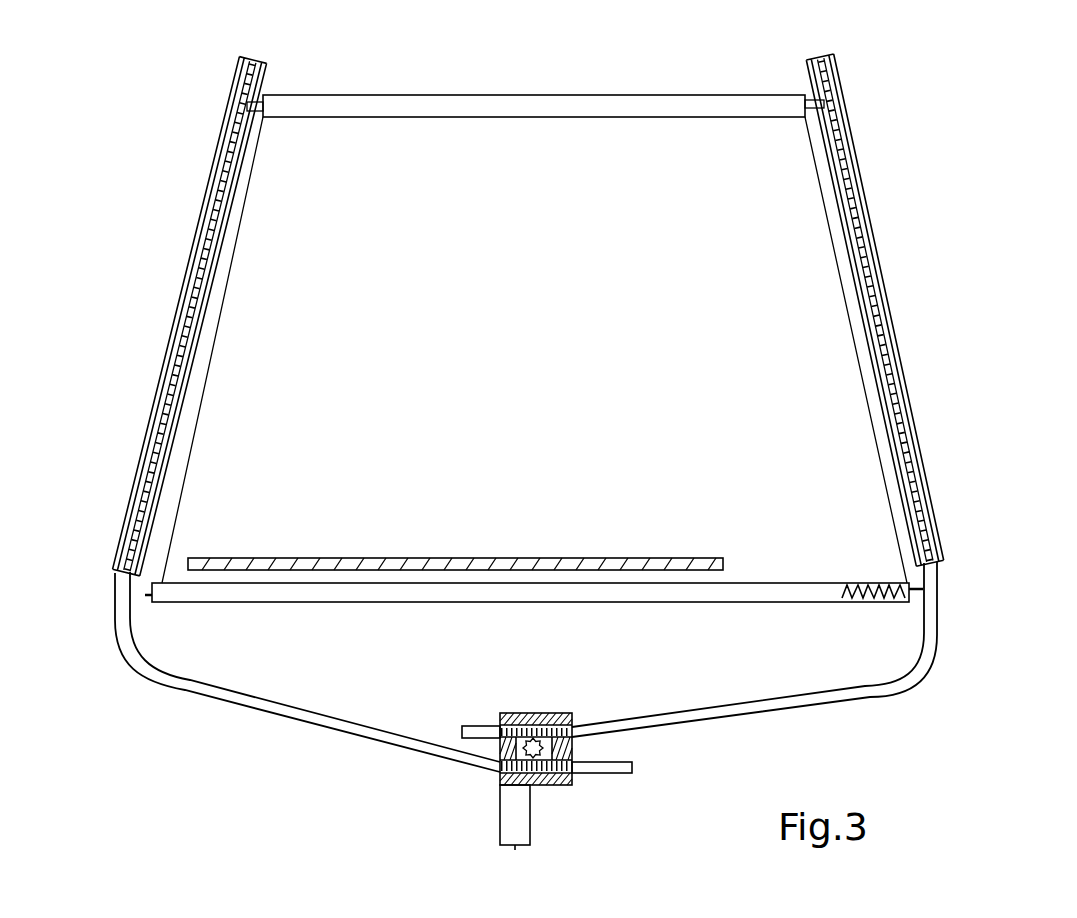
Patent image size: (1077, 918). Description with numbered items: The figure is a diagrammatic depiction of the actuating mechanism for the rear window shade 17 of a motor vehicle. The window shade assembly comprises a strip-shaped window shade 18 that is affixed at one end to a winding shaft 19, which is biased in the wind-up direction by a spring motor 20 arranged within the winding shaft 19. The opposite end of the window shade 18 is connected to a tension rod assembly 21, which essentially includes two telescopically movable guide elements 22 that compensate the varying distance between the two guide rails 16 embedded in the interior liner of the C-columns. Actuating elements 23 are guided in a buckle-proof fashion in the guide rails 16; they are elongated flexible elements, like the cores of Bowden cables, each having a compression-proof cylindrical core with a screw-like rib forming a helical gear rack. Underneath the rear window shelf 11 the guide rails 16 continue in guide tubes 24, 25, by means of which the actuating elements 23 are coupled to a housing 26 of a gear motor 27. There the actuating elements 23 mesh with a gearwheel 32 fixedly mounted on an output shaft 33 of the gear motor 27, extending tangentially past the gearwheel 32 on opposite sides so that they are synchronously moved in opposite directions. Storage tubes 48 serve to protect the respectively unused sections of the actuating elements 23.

The rear window shelf 11 is at (400, 565).
The guide rails 16 is at (238, 83).
The window shade 17 is at (975, 165).
The window shade 18 is at (560, 359).
The winding shaft 19 is at (903, 603).
The spring motor 20 is at (863, 583).
The tension rod assembly 21 is at (543, 107).
The telescopically movable guide elements 22 is at (263, 100).
The actuating elements 23 is at (208, 294).
The guide tube 24 is at (268, 707).
The guide tube 25 is at (907, 682).
The housing 26 is at (573, 786).
The gear motor 27 is at (547, 739).
The gearwheel 32 is at (577, 765).
The output shaft 33 is at (500, 726).
The storage tube 48 is at (465, 730).